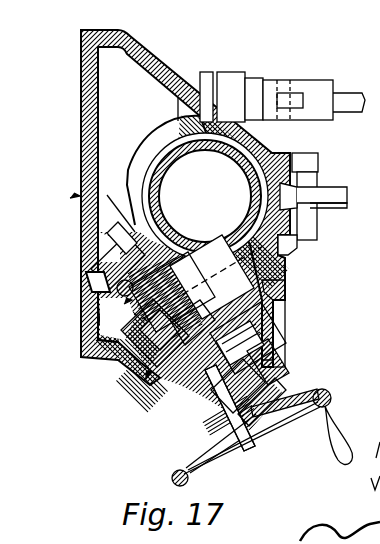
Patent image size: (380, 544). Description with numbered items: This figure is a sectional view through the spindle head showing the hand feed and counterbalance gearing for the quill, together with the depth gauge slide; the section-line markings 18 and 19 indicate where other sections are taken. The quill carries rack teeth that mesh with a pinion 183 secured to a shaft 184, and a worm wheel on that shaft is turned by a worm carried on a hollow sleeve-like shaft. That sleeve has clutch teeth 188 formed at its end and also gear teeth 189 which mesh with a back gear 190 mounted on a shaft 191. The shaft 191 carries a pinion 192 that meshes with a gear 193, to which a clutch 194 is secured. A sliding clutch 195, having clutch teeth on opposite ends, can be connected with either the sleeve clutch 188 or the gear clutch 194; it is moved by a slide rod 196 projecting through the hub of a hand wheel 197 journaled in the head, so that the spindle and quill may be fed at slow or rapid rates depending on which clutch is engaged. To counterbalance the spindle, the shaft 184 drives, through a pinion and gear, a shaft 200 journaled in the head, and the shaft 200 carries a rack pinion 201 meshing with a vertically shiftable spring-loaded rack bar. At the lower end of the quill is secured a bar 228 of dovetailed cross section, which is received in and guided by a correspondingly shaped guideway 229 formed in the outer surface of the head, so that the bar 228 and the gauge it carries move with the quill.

The section line 18- 18 is at (216, 254).
The section line 19- 19 is at (128, 284).
The pinion 183 is at (288, 290).
The shaft 184 is at (290, 252).
The clutch teeth 188 is at (178, 393).
The gear teeth 189 is at (180, 387).
The back gear 190 is at (262, 307).
The shaft 191 is at (256, 352).
The pinion 192 is at (270, 325).
The gear 193 is at (226, 400).
The clutch 194 is at (276, 366).
The sliding clutch 195 is at (232, 398).
The slide rod 196 is at (258, 392).
The hand wheel 197 is at (332, 403).
The shaft 200 is at (98, 286).
The rack pinion 201 is at (97, 254).
The bar 228 is at (318, 168).
The guideway 229 is at (312, 166).